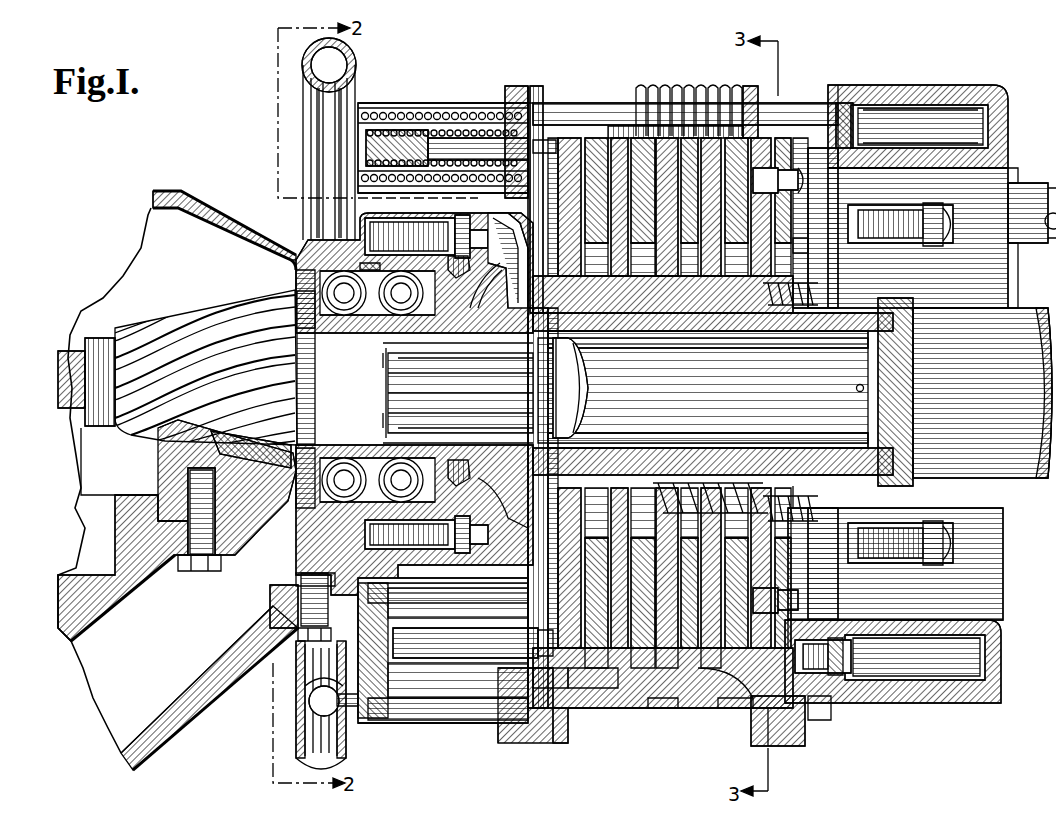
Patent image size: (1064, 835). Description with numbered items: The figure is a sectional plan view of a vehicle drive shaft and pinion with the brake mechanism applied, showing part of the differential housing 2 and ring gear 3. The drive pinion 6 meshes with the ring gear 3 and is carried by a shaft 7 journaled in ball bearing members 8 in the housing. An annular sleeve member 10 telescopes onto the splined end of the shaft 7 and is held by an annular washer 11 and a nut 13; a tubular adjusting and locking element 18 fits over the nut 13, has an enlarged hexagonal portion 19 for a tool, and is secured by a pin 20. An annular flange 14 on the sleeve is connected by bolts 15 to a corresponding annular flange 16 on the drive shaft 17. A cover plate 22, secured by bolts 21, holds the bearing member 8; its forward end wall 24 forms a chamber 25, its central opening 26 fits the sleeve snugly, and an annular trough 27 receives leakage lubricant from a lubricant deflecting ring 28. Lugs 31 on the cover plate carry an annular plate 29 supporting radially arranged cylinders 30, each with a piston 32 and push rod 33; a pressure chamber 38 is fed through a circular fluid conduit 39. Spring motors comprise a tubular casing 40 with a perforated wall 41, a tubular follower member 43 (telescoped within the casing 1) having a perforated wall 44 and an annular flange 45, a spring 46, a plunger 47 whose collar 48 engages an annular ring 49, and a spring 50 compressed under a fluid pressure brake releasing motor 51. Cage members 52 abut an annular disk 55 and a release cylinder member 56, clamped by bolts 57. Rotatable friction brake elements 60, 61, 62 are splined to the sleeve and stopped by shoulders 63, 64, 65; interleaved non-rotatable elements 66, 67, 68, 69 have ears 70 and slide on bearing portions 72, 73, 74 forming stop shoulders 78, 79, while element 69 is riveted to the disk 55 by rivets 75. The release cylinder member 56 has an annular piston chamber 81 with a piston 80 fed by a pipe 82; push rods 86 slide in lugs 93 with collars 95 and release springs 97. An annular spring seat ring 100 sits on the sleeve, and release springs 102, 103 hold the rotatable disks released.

The casing 1 is at (155, 190).
The differential housing 2 is at (198, 192).
The ring gear 3 is at (238, 508).
The drive pinion 6 is at (130, 320).
The shaft 7 is at (300, 320).
The ball bearing members 8 is at (320, 430).
The annular sleeve member 10 is at (660, 465).
The annular washer 11 is at (575, 330).
The nut 13 is at (580, 380).
The annular flange 14 is at (865, 585).
The bolts 15 is at (940, 232).
The annular flange 16 is at (905, 270).
The drive shaft 17 is at (1025, 285).
The adjusting and locking element 18 is at (650, 440).
The enlarged hexagonal portion 19 is at (870, 465).
The pin 20 is at (856, 380).
The bolts 21 is at (468, 222).
The cover plate 22 is at (450, 210).
The forward end wall 24 is at (460, 270).
The chamber 25 is at (372, 267).
The central opening 26 is at (462, 455).
The annular trough 27 is at (465, 320).
The lubricant deflecting ring 28 is at (368, 322).
The annular plate 29 is at (503, 134).
The cylinders 30 is at (460, 718).
The lugs 31 is at (499, 395).
The piston 32 is at (380, 625).
The push rod 33 is at (458, 640).
The pressure chamber 38 is at (340, 712).
The circular fluid conduit 39 is at (357, 734).
The tubular casing 40 is at (358, 100).
The perforated wall 41 is at (345, 112).
The tubular follower member 43 is at (398, 105).
The perforated wall 44 is at (345, 124).
The annular flange 45 is at (540, 110).
The spring 46 is at (430, 108).
The plunger 47 is at (418, 200).
The collar 48 is at (478, 151).
The annular ring 49 is at (530, 80).
The spring 50 is at (434, 100).
The fluid pressure brake releasing motor 51 is at (908, 95).
The cage members 52 is at (552, 700).
The annular disk 55 is at (765, 740).
The release cylinder member 56 is at (797, 728).
The bolts 57 is at (825, 700).
The rotatable friction brake element 60 is at (590, 700).
The rotatable friction brake element 61 is at (663, 678).
The rotatable friction brake element 62 is at (710, 571).
The stop shoulder 63 is at (555, 212).
The stop shoulder 64 is at (663, 225).
The stop shoulder 65 is at (747, 223).
The non-rotatable friction brake element 66 is at (674, 574).
The non-rotatable friction brake element 67 is at (645, 653).
The non-rotatable friction brake element 68 is at (713, 653).
The non-rotatable friction brake element 69 is at (726, 685).
The ears 70 is at (692, 715).
The bearing portions 72 is at (594, 680).
The bearing portions 73 is at (650, 700).
The bearing portions 74 is at (718, 700).
The rivets 75 is at (790, 185).
The stop shoulder 78 is at (600, 653).
The stop shoulder 79 is at (673, 653).
The piston 80 is at (848, 118).
The annular piston chamber 81 is at (975, 118).
The pipe 82 is at (1030, 232).
The push rod 86 is at (772, 96).
The lug 93 is at (628, 85).
The collar 95 is at (736, 80).
The release spring 97 is at (670, 88).
The annular spring seat ring 100 is at (809, 244).
The release spring 102 is at (796, 529).
The release spring 103 is at (795, 279).